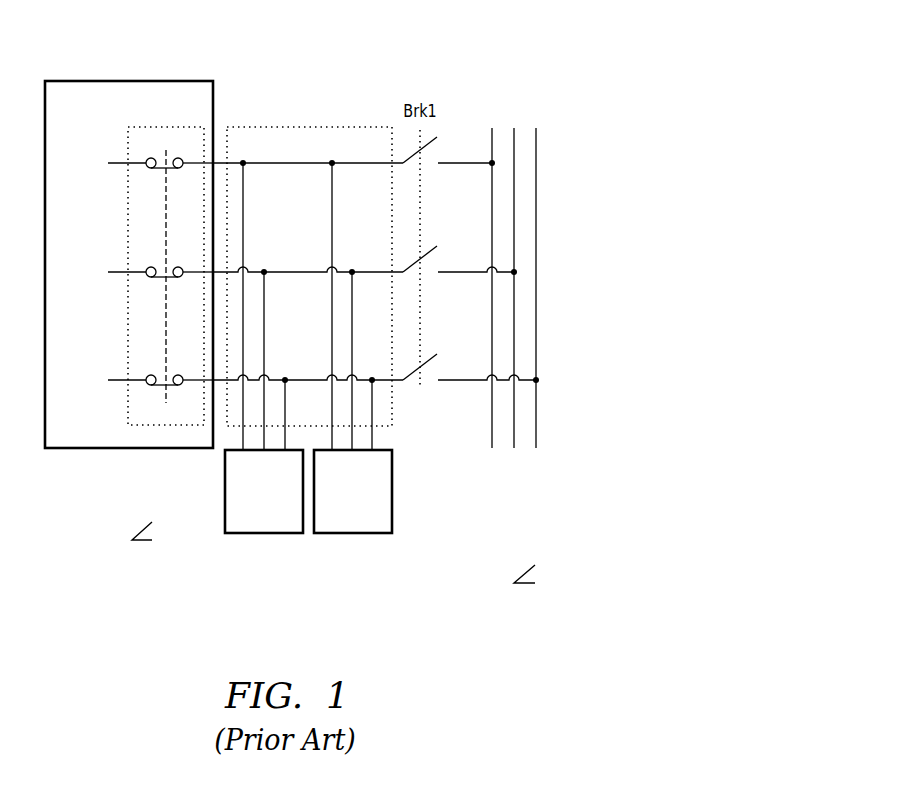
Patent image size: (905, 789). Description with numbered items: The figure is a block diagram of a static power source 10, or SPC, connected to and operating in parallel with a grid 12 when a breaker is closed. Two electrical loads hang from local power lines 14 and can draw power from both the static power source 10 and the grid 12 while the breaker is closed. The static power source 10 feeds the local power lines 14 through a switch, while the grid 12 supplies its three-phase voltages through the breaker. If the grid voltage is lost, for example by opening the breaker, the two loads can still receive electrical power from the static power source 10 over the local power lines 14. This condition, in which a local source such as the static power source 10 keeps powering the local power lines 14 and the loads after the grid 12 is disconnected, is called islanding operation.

The static power source 10 is at (122, 69).
The grid 12 is at (516, 106).
The local power lines 14 is at (306, 46).